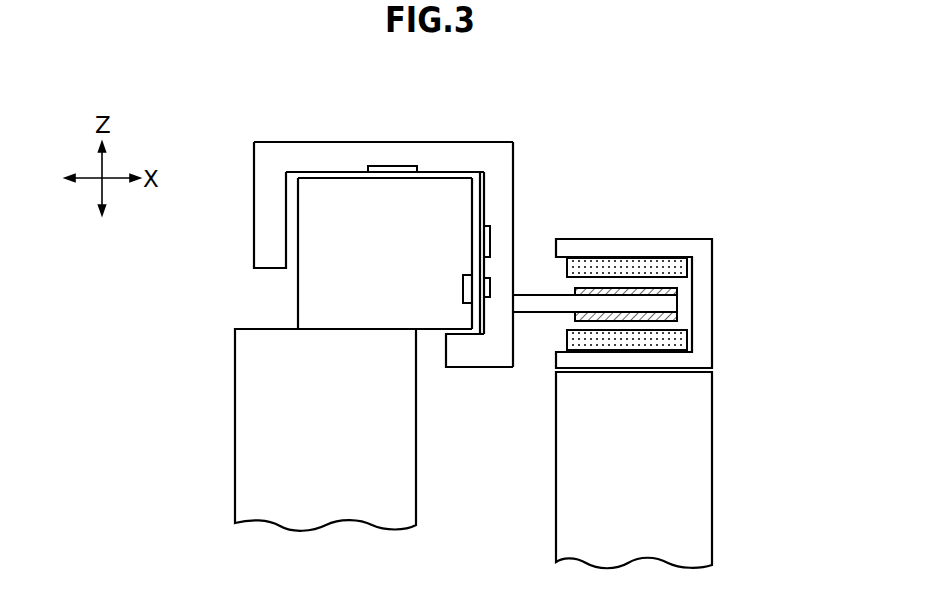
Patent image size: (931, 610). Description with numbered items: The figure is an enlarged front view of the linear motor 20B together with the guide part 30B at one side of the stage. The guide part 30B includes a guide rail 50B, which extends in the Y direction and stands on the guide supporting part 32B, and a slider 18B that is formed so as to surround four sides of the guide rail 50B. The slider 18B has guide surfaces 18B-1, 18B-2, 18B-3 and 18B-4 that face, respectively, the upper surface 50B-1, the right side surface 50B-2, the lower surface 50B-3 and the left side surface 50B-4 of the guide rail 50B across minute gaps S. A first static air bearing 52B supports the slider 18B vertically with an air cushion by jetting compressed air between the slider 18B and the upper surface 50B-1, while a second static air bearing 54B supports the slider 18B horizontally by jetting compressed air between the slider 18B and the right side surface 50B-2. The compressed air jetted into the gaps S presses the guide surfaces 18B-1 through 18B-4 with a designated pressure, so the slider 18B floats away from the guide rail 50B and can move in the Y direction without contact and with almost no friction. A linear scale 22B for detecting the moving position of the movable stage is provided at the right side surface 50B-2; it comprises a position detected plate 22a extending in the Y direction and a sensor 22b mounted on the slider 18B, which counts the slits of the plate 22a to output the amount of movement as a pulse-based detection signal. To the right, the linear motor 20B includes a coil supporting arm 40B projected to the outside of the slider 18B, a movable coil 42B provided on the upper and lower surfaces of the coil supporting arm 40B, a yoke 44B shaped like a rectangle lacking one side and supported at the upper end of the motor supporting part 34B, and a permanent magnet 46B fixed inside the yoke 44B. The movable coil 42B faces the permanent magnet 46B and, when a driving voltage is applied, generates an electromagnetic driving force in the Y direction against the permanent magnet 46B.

The guide part 30B is at (500, 126).
The guide rail 50B is at (290, 302).
The upper surface 50B-1 is at (337, 178).
The right side surface 50B-2 is at (487, 188).
The lower surface 50B-3 is at (425, 330).
The left side surface 50B-4 is at (298, 262).
The slider 18B is at (463, 175).
The guide surface 18B-1 is at (358, 179).
The guide surface 18B-2 is at (472, 224).
The guide surface 18B-3 is at (457, 329).
The guide surface 18B-4 is at (298, 248).
The first static air bearing 52B is at (390, 166).
The minute gap S is at (472, 190).
The linear scale 22B is at (500, 272).
The position detected plate 22a is at (463, 278).
The sensor 22b is at (490, 297).
The second static air bearing 54B is at (491, 242).
The guide supporting part 32B is at (236, 413).
The coil supporting arm 40B is at (538, 313).
The linear motor 20B is at (730, 253).
The yoke 44B is at (696, 240).
The movable coil 42B is at (638, 270).
The permanent magnet 46B is at (688, 268).
The motor supporting part 34B is at (702, 452).